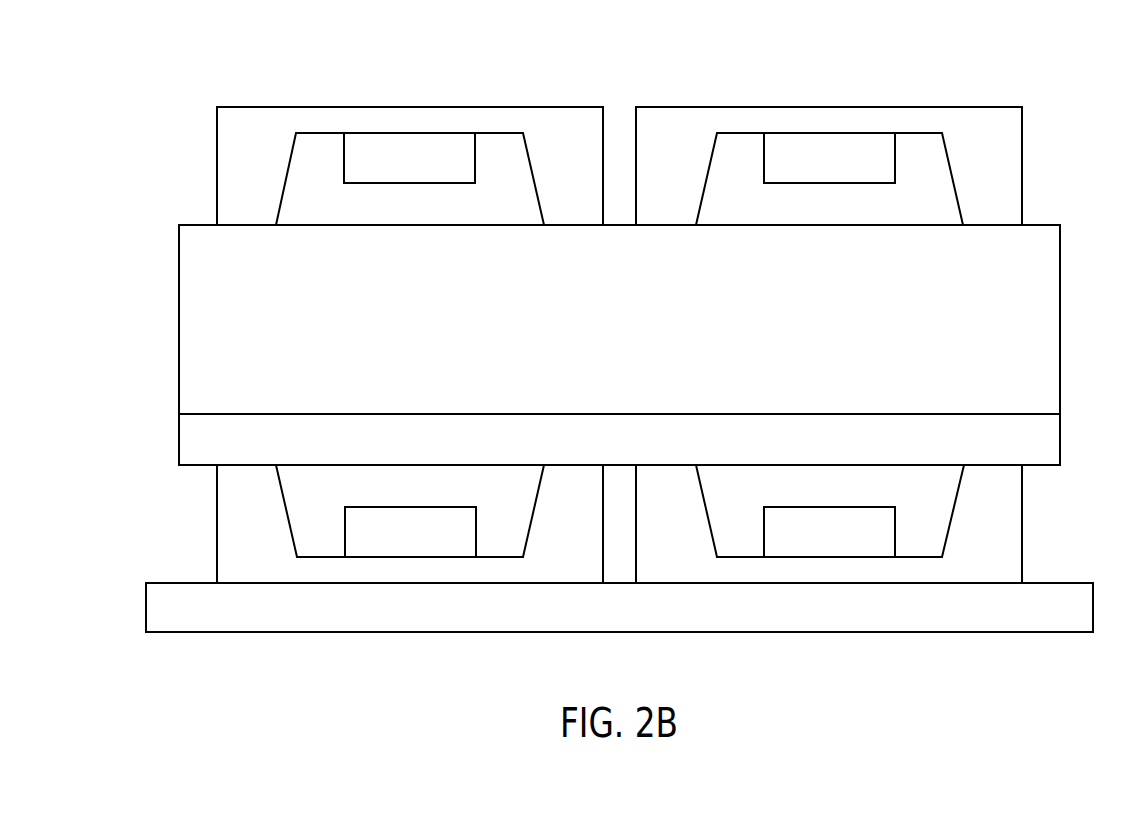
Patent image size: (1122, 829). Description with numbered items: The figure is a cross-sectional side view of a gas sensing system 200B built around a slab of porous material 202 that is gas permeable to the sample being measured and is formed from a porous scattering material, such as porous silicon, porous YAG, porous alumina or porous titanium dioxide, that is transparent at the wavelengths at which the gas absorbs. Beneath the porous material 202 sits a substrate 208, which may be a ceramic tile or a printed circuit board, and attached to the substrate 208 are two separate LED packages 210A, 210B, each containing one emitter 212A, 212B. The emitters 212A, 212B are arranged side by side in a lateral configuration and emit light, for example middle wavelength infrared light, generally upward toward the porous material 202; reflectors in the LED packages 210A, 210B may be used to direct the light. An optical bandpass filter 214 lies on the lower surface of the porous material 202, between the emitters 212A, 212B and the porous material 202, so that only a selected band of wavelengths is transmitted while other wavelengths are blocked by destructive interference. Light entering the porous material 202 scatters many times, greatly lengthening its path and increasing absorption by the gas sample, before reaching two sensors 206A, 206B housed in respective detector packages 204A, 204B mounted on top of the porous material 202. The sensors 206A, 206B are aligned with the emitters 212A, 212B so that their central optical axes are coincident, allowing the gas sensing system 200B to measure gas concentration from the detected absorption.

The gas sensing system 200B is at (227, 68).
The porous material 202 is at (1035, 322).
The detector package 204A is at (410, 107).
The detector package 204B is at (828, 107).
The sensor 206A is at (410, 183).
The sensor 206B is at (828, 183).
The substrate 208 is at (848, 612).
The LED package 210A is at (243, 530).
The LED package 210B is at (996, 530).
The emitter 212A is at (410, 507).
The emitter 212B is at (828, 507).
The optical bandpass filter 214 is at (203, 446).